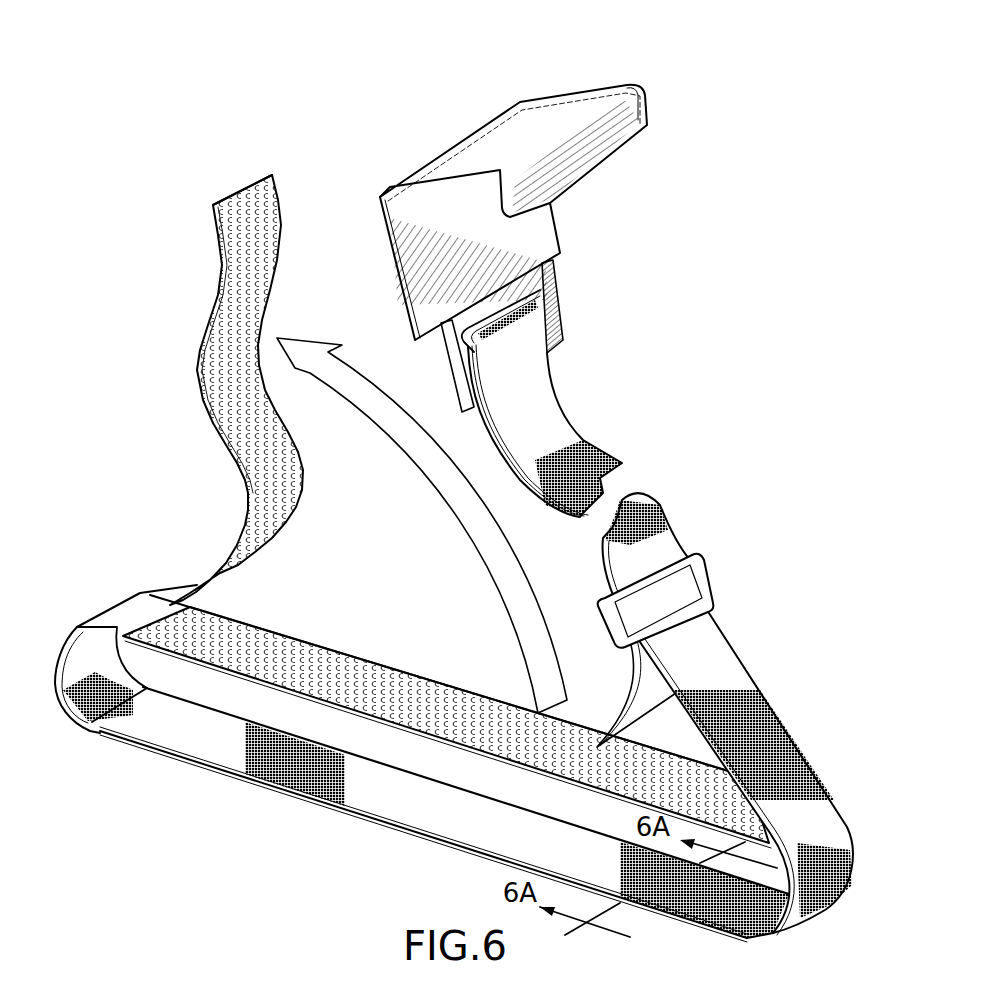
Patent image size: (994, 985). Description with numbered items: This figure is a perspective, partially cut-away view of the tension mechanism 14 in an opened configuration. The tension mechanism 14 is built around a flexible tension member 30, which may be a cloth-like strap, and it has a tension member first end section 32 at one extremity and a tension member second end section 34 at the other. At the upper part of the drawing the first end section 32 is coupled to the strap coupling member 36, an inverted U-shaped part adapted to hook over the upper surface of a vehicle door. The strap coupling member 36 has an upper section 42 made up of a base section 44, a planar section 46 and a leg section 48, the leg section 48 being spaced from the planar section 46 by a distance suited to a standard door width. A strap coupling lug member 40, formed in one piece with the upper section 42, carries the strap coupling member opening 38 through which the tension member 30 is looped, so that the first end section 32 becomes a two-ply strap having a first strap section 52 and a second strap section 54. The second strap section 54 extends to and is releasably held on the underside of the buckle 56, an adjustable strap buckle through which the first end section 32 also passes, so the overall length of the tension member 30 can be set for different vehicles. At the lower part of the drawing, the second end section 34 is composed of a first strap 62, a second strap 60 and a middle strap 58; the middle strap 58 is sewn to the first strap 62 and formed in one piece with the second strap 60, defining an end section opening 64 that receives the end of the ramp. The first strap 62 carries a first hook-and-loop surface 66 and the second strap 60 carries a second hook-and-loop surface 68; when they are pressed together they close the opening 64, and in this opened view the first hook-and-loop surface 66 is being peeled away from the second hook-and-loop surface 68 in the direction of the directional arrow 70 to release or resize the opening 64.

The tension mechanism 14 is at (745, 637).
The tension member 30 is at (670, 515).
The tension member first end section 32 is at (552, 388).
The tension member second end section 34 is at (345, 820).
The strap coupling member 36 is at (578, 100).
The strap coupling member opening 38 is at (560, 283).
The strap coupling lug member 40 is at (560, 325).
The strap coupling member upper section 42 is at (413, 300).
The base section 44 is at (510, 132).
The planar section 46 is at (410, 218).
The leg section 48 is at (648, 110).
The first strap section 52 is at (590, 440).
The second strap section 54 is at (620, 700).
The buckle 56 is at (705, 578).
The middle strap 58 is at (425, 828).
The second strap 60 is at (338, 648).
The first strap 62 is at (228, 450).
The end section opening 64 is at (255, 700).
The first hook-and-loop surface 66 is at (270, 183).
The second hook-and-loop surface 68 is at (260, 640).
The directional arrow 70 is at (410, 457).